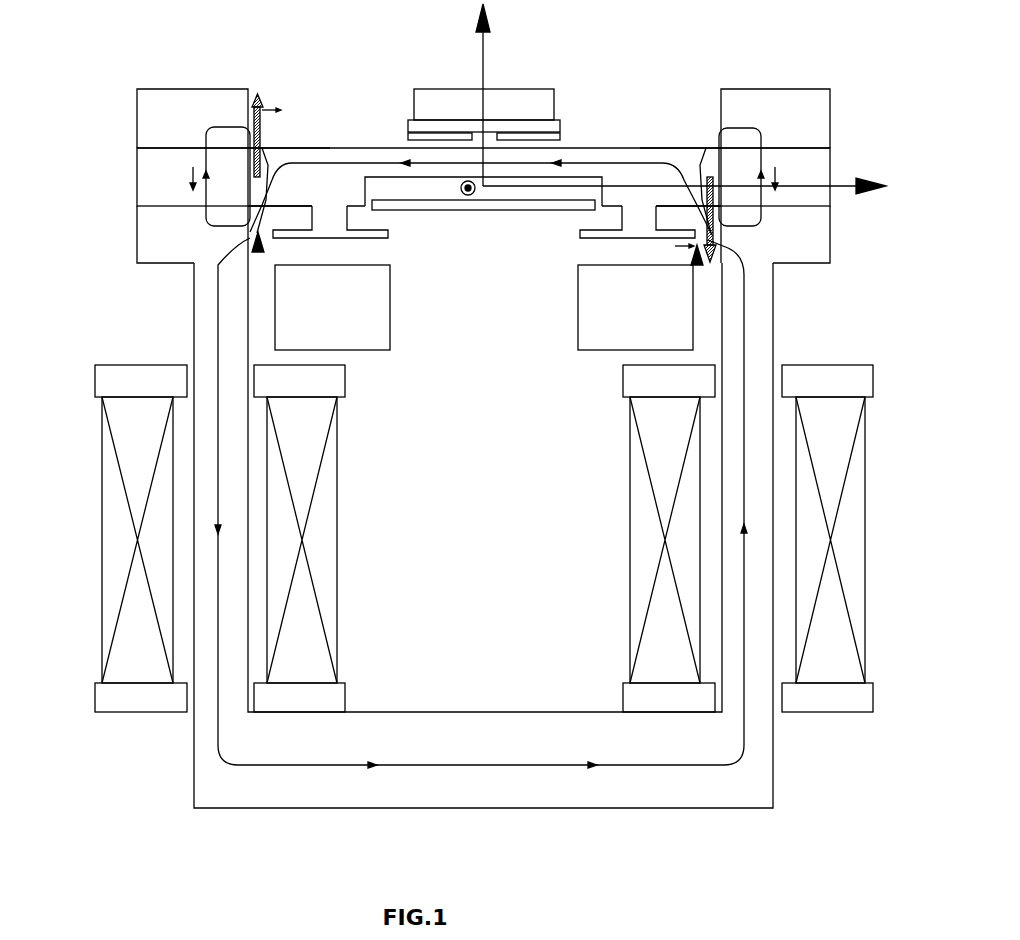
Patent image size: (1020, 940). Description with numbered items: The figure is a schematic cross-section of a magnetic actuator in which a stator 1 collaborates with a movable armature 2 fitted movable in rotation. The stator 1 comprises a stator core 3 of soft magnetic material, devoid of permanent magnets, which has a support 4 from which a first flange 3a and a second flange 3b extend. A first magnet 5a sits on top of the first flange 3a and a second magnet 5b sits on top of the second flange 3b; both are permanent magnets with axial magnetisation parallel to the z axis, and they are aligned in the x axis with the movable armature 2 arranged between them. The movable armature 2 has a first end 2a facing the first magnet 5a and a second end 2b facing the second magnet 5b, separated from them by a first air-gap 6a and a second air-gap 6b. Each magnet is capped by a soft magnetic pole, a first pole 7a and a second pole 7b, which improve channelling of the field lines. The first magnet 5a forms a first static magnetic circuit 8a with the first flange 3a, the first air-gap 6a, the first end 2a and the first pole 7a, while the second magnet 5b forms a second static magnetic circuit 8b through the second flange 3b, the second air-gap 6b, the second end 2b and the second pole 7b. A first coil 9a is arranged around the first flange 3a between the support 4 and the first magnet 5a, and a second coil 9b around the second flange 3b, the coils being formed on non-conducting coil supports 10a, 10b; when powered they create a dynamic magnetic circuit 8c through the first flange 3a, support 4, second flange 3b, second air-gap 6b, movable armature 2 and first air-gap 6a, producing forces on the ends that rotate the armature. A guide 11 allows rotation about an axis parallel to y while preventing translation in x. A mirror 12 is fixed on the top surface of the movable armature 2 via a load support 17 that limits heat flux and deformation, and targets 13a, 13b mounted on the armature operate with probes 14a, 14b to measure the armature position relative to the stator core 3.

The stator 1 is at (146, 812).
The movable armature 2 is at (347, 148).
The first end 2a is at (283, 150).
The second end 2b is at (687, 148).
The stator core 3 is at (808, 794).
The first flange 3a is at (157, 248).
The second flange 3b is at (822, 243).
The support 4 is at (300, 803).
The first magnet 5a is at (152, 168).
The second magnet 5b is at (827, 170).
The first air-gap 6a is at (260, 254).
The second air-gap 6b is at (697, 267).
The first pole 7a is at (152, 90).
The second pole 7b is at (797, 91).
The first static magnetic circuit 8a is at (222, 127).
The second static magnetic circuit 8b is at (743, 126).
The dynamic magnetic circuit 8c is at (680, 767).
The first coil 9a is at (108, 507).
The second coil 9b is at (650, 568).
The first coil support 10a is at (105, 695).
The second coil support 10b is at (628, 703).
The guide 11 is at (528, 203).
The mirror 12 is at (532, 90).
The first target 13a is at (387, 232).
The second target 13b is at (583, 232).
The first probe 14a is at (393, 307).
The second probe 14b is at (607, 309).
The load support 17 is at (550, 130).